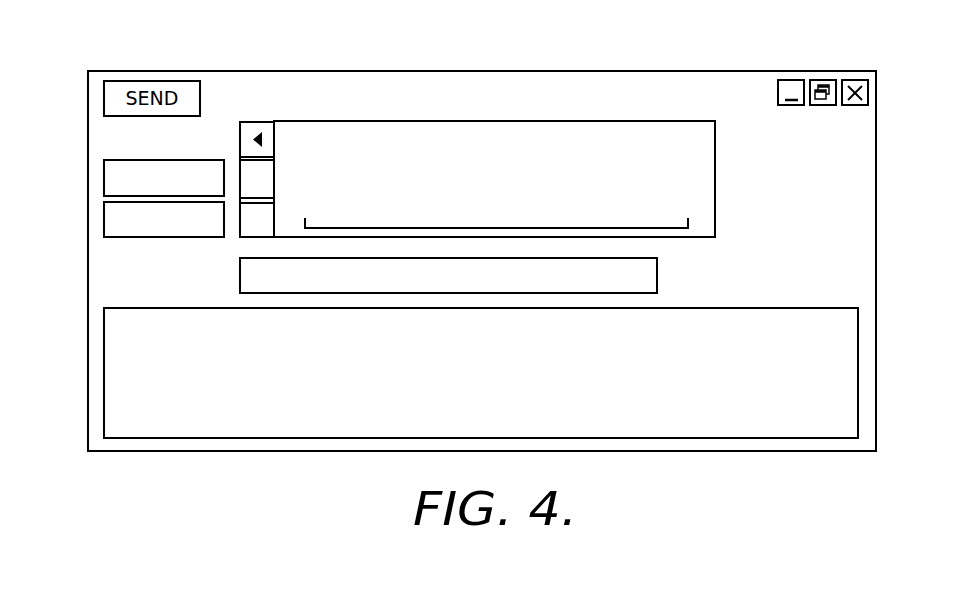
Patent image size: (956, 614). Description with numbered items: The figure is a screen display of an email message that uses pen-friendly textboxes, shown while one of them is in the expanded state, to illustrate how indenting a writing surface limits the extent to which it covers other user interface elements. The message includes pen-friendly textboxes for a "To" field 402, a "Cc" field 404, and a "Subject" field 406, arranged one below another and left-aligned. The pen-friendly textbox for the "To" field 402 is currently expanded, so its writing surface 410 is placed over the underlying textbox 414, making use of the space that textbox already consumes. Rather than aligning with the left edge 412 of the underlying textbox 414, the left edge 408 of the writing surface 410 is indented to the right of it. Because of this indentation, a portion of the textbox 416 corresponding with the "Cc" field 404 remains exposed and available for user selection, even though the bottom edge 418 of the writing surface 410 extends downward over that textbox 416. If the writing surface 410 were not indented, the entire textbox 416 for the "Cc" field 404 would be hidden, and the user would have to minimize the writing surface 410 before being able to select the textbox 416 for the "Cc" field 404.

The "To" field 402 is at (104, 181).
The "Cc" field 404 is at (104, 220).
The "Subject" field 406 is at (105, 274).
The left edge of the writing surface 408 is at (274, 137).
The writing surface 410 is at (455, 120).
The left edge of the underlying textbox 412 is at (240, 162).
The underlying textbox 414 is at (260, 179).
The textbox 416 is at (257, 237).
The bottom edge of the writing surface 418 is at (697, 238).